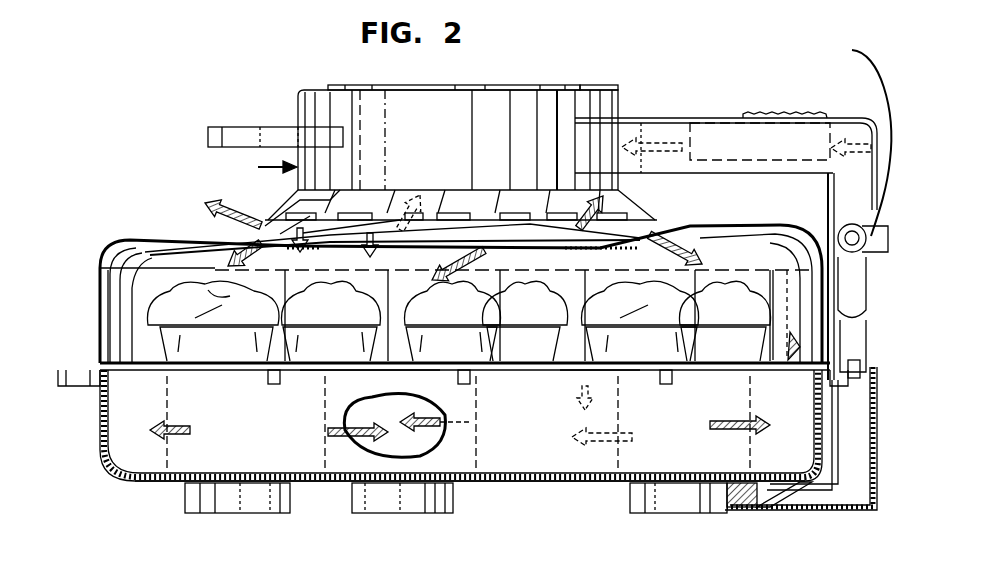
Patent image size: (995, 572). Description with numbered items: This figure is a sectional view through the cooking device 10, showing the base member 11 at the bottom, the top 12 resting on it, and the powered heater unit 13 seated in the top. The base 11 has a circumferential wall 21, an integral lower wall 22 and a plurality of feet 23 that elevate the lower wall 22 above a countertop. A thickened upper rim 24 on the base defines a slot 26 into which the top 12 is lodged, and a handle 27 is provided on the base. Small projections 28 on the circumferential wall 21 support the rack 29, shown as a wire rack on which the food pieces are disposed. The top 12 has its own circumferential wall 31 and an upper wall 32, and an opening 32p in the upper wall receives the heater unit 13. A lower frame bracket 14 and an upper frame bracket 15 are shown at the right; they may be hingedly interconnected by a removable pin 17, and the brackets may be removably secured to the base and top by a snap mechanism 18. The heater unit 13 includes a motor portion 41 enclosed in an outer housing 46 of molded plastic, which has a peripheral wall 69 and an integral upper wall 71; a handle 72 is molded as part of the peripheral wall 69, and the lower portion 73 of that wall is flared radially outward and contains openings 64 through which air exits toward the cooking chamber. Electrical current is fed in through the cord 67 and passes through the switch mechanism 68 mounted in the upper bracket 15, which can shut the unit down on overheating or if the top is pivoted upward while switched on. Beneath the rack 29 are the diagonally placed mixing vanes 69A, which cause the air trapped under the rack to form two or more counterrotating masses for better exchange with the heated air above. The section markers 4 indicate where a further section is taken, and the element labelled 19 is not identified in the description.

The cooking device 10 is at (162, 104).
The base member 11 is at (533, 495).
The top 12 is at (101, 228).
The powered heater unit 13 is at (482, 72).
The lower frame bracket 14 is at (872, 435).
The upper frame bracket 15 is at (847, 122).
The removable pin 17 is at (858, 298).
The snap mechanism 18 is at (740, 508).
The rear wall 19 is at (822, 316).
The circumferential wall 21 is at (100, 450).
The lower wall 22 is at (331, 500).
The feet 23 is at (185, 501).
The thickened upper rim 24 is at (98, 400).
The slot 26 is at (101, 322).
The handle 27 is at (70, 366).
The small projections 28 is at (273, 386).
The rack 29 is at (372, 373).
The circumferential wall 31 is at (100, 291).
The upper wall 32 is at (175, 232).
The opening 32p is at (340, 190).
The motor portion 41 is at (264, 165).
The outer housing 46 is at (619, 106).
The openings 64 is at (462, 190).
The electrical cord 67 is at (858, 138).
The switch mechanism 68 is at (788, 112).
The peripheral wall 69 is at (368, 114).
The mixing vanes 69A is at (733, 225).
The upper wall 71 is at (413, 85).
The handle 72 is at (252, 126).
The lower portion 73 is at (278, 206).
The section line 4- 4 is at (100, 262).